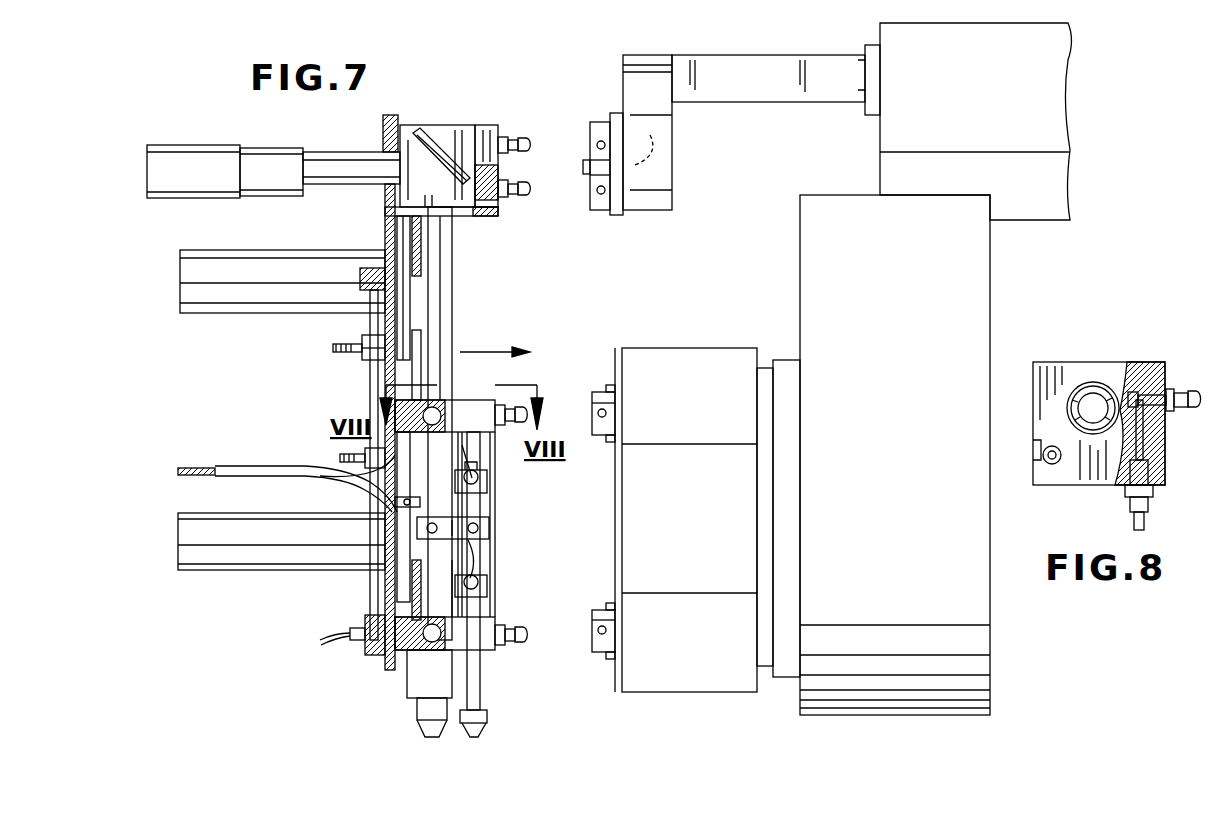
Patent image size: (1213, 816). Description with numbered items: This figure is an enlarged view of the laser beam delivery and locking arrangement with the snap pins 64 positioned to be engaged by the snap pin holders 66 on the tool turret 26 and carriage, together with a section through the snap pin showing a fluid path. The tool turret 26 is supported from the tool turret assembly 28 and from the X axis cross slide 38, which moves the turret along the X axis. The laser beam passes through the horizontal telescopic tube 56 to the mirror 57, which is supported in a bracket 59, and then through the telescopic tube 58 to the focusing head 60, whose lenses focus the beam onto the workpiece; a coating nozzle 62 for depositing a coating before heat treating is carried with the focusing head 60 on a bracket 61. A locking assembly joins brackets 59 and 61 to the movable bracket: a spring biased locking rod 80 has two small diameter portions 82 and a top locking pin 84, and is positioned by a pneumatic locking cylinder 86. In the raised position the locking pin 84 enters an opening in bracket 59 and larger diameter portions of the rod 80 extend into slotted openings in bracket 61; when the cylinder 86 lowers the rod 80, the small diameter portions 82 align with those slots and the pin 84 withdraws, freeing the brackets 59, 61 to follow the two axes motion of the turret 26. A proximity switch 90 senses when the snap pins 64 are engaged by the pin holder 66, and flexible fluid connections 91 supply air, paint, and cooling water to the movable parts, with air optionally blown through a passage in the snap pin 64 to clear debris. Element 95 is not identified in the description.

In FIG. 7, the tool turret 26 is at (682, 348).
In FIG. 7, the tool turret assembly 28 is at (976, 121).
In FIG. 7, the X axis cross slide 38 is at (895, 455).
In FIG. 7, the telescopic tube 56 is at (195, 160).
In FIG. 7, the mirror 57 is at (408, 147).
In FIG. 7, the telescopic tube 58 is at (453, 290).
In FIG. 8, the telescopic tube 58 is at (1090, 385).
In FIG. 7, the bracket 59 is at (482, 135).
In FIG. 7, the focusing head 60 is at (420, 700).
In FIG. 7, the bracket 61 is at (496, 508).
In FIG. 7, the coating nozzle 62 is at (481, 682).
In FIG. 7, the snap pin 64 is at (513, 135).
In FIG. 8, the snap pin 64 is at (1190, 390).
In FIG. 7, the snap pin holder 66 is at (590, 145).
In FIG. 7, the locking rod 80 is at (410, 330).
In FIG. 8, the locking rod 80 is at (1047, 448).
In FIG. 7, the small diameter portion 82 is at (416, 372).
In FIG. 8, the small diameter portion 82 is at (1052, 464).
In FIG. 7, the locking pin 84 is at (387, 210).
In FIG. 7, the pneumatic locking cylinder 86 is at (370, 380).
In FIG. 7, the proximity switch 90 is at (586, 166).
In FIG. 7, the flexible fluid connections 91 is at (285, 466).
In FIG. 7, the hose 95 is at (362, 648).